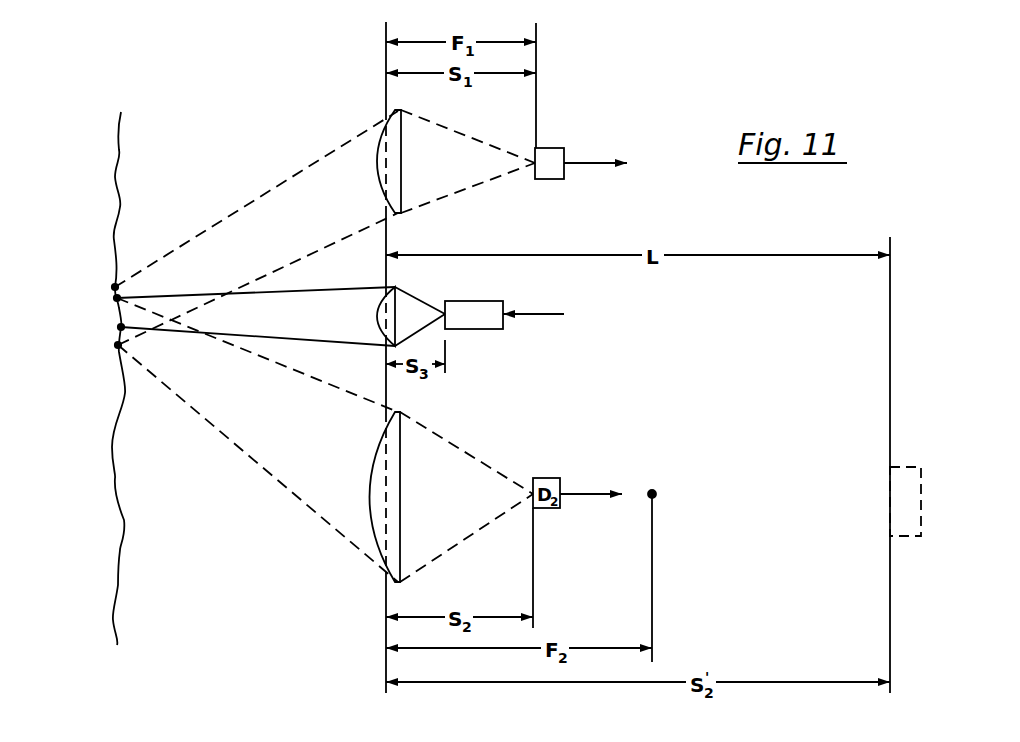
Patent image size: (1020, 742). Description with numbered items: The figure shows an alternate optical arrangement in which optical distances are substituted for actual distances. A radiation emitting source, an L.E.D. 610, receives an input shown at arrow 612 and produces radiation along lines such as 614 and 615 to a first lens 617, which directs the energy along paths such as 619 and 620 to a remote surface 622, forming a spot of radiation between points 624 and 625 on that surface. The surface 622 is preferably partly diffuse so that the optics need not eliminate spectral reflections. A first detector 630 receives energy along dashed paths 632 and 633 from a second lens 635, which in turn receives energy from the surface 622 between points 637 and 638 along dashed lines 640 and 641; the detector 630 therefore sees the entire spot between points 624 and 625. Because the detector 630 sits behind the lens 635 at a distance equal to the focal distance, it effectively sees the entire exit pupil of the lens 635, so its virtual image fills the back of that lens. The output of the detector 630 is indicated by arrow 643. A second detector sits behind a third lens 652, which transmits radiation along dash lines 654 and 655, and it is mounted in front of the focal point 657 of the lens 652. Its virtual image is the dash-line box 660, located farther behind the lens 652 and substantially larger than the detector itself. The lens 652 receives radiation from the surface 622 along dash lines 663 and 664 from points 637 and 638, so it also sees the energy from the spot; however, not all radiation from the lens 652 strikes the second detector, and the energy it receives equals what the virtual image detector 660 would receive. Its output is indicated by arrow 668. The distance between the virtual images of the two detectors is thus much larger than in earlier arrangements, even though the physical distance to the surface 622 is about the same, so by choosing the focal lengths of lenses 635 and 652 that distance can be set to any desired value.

The L.E.D. 610 is at (505, 303).
The input arrow 612 is at (541, 314).
The radiation line 614 is at (420, 300).
The radiation line 615 is at (425, 327).
The first lens 617 is at (395, 287).
The radiation path 619 is at (303, 290).
The radiation path 620 is at (284, 337).
The remote surface 622 is at (124, 150).
The spot point 624 is at (117, 298).
The spot point 625 is at (121, 327).
The first detector 630 is at (548, 148).
The energy path 632 is at (450, 126).
The energy path 633 is at (450, 196).
The second lens 635 is at (401, 160).
The surface point 637 is at (115, 287).
The surface point 638 is at (118, 345).
The energy path 640 is at (282, 178).
The energy path 641 is at (335, 236).
The output arrow 643 is at (597, 163).
The third lens 652 is at (400, 512).
The radiation line 654 is at (433, 430).
The radiation line 655 is at (452, 553).
The focal point 657 is at (652, 494).
The virtual image of second detector 660 is at (925, 513).
The radiation path 663 is at (335, 387).
The radiation path 664 is at (222, 427).
The output arrow 668 is at (580, 494).